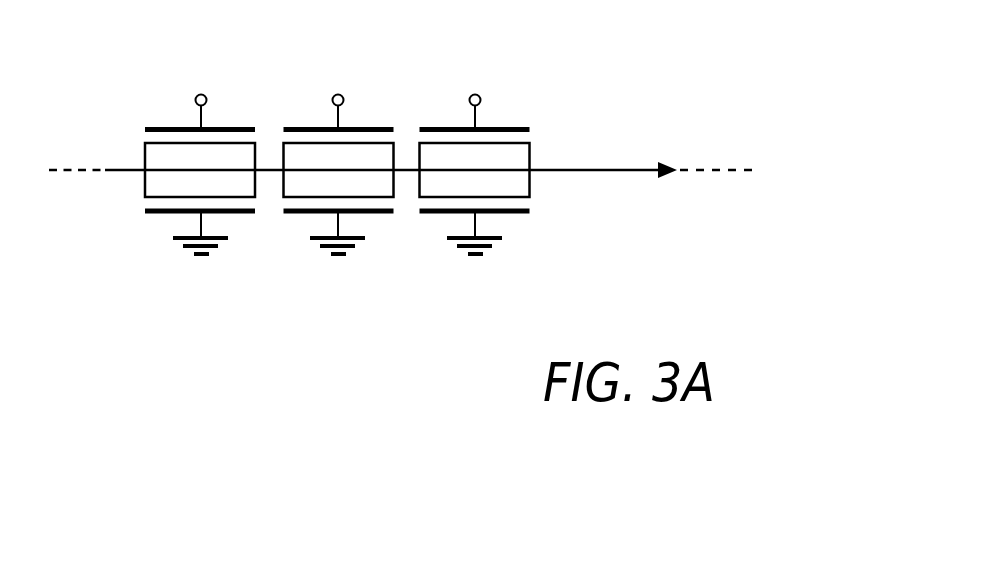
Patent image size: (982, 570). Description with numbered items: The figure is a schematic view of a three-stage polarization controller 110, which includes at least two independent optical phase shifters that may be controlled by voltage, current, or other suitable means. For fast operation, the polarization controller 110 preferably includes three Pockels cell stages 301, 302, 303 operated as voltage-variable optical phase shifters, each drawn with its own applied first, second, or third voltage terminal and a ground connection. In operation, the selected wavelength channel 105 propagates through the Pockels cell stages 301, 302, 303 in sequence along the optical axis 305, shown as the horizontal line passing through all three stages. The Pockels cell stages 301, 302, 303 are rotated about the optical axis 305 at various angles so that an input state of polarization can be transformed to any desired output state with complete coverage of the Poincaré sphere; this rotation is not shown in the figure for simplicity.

The polarization controller 110 is at (568, 52).
The selected wavelength channel 105 is at (627, 172).
The optical axis 305 is at (742, 172).
The first Pockels cell stage 301 is at (128, 213).
The second Pockels cell stage 302 is at (276, 230).
The third Pockels cell stage 303 is at (418, 220).